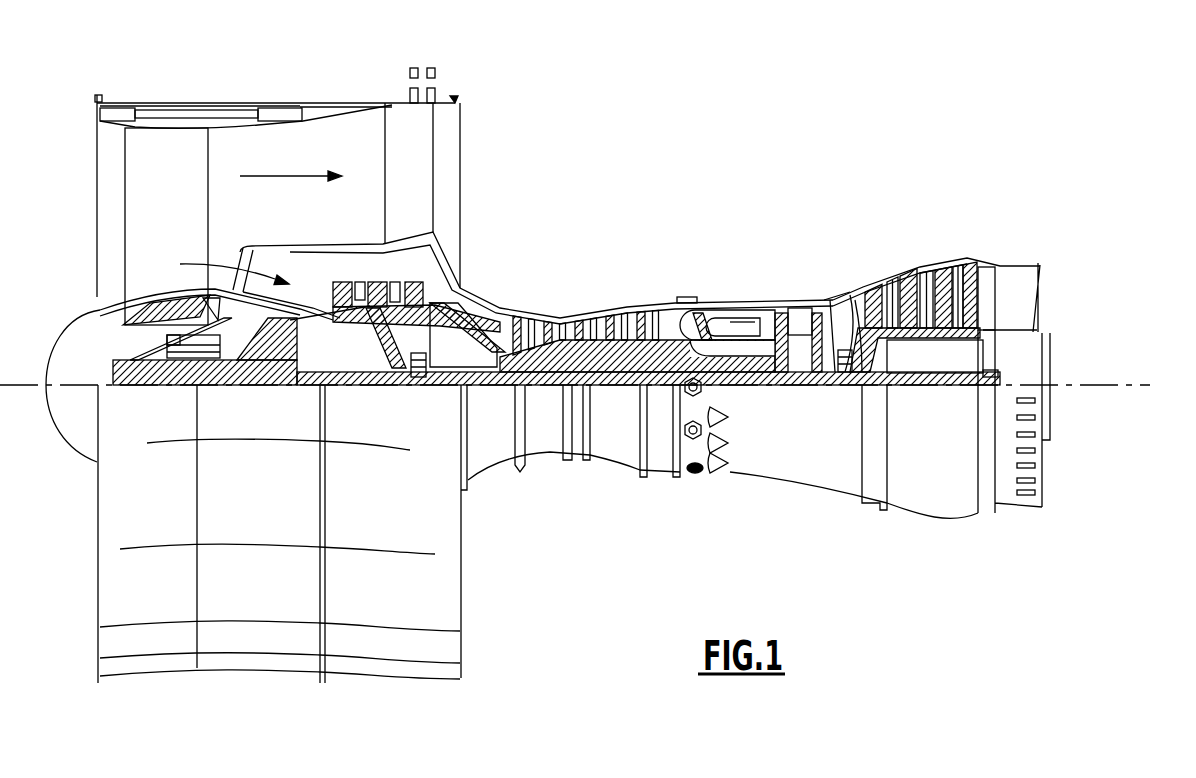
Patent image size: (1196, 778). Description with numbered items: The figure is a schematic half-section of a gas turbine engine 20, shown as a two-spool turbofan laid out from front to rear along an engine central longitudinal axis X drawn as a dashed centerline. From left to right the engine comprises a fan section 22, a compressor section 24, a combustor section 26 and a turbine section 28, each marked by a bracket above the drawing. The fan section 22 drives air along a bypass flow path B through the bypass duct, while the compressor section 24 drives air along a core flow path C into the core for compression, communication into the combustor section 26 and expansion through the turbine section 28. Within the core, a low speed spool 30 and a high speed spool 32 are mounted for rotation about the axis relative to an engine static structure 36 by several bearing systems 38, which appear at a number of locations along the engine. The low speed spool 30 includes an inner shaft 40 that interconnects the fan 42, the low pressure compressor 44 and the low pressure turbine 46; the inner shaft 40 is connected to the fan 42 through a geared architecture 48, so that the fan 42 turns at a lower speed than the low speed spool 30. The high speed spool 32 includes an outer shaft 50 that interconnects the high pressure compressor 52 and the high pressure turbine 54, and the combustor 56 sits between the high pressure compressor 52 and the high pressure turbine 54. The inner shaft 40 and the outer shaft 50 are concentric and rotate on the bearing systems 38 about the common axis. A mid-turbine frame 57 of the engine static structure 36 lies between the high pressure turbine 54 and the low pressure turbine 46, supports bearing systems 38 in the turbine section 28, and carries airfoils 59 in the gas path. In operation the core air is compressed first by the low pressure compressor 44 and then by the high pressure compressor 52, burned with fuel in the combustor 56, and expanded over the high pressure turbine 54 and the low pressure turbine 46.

The gas turbine engine 20 is at (740, 152).
The fan section 22 is at (305, 74).
The compressor section 24 is at (320, 218).
The combustor section 26 is at (770, 218).
The turbine section 28 is at (992, 218).
The low speed spool 30 is at (617, 402).
The high speed spool 32 is at (657, 345).
The engine static structure 36 is at (660, 487).
The bearing systems 38 is at (175, 360).
The inner shaft 40 is at (480, 390).
The fan 42 is at (182, 233).
The low pressure compressor 44 is at (395, 286).
The low pressure turbine 46 is at (927, 272).
The geared architecture 48 is at (287, 367).
The outer shaft 50 is at (745, 387).
The high pressure compressor 52 is at (592, 320).
The high pressure turbine 54 is at (799, 308).
The combustor 56 is at (733, 327).
The mid-turbine frame 57 is at (845, 295).
The airfoils 59 is at (870, 388).
The bypass flow path B is at (276, 176).
The core flow path C is at (224, 268).
The engine central longitudinal axis X is at (1128, 385).